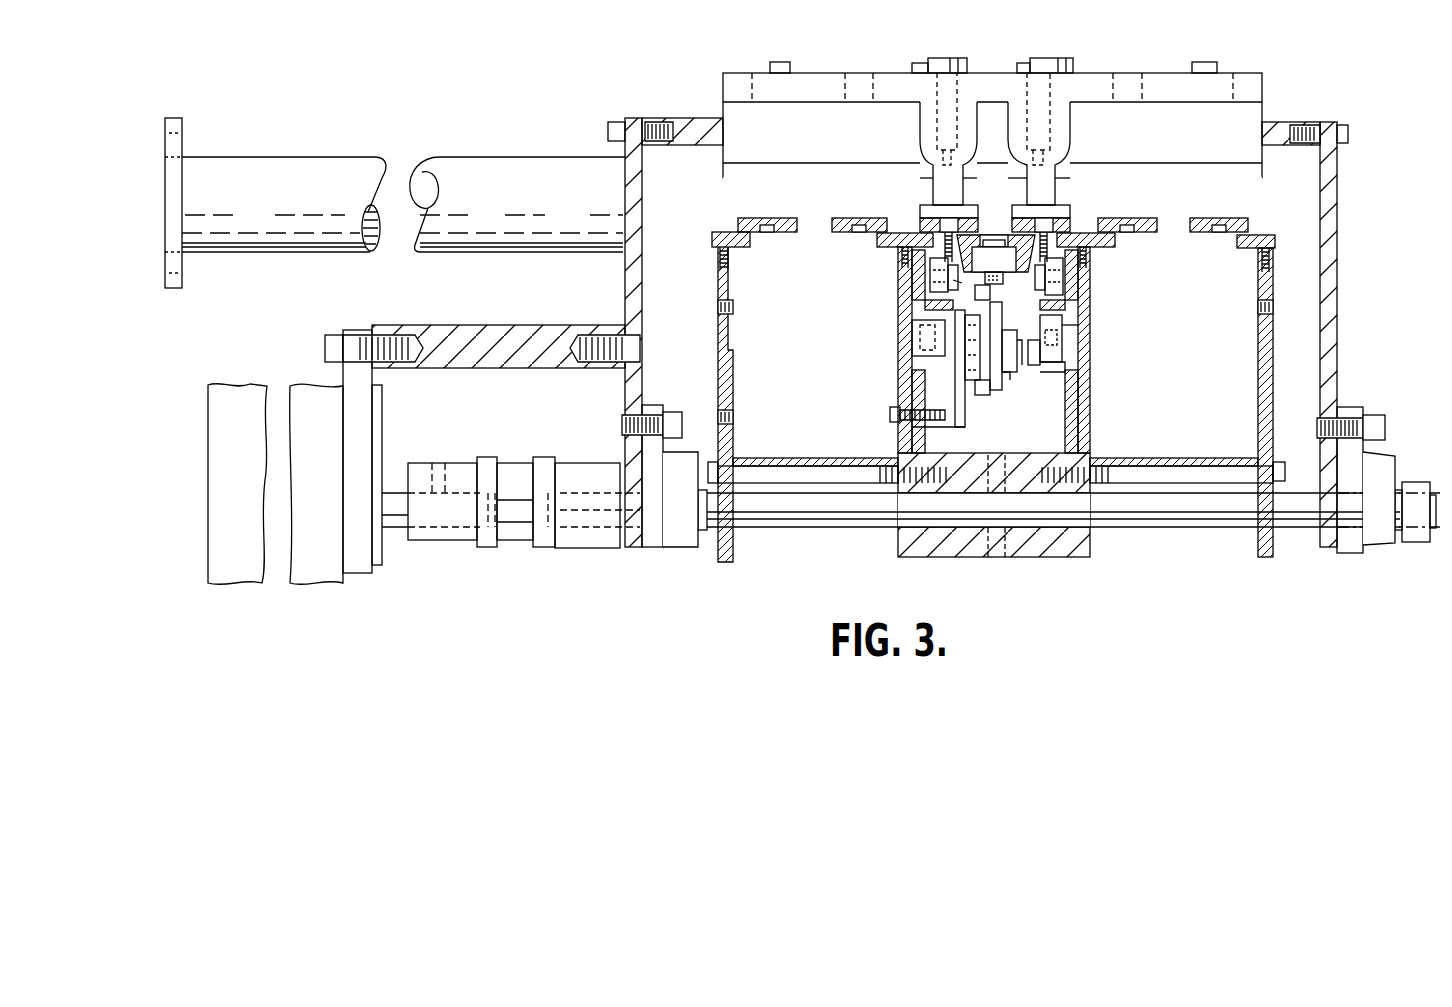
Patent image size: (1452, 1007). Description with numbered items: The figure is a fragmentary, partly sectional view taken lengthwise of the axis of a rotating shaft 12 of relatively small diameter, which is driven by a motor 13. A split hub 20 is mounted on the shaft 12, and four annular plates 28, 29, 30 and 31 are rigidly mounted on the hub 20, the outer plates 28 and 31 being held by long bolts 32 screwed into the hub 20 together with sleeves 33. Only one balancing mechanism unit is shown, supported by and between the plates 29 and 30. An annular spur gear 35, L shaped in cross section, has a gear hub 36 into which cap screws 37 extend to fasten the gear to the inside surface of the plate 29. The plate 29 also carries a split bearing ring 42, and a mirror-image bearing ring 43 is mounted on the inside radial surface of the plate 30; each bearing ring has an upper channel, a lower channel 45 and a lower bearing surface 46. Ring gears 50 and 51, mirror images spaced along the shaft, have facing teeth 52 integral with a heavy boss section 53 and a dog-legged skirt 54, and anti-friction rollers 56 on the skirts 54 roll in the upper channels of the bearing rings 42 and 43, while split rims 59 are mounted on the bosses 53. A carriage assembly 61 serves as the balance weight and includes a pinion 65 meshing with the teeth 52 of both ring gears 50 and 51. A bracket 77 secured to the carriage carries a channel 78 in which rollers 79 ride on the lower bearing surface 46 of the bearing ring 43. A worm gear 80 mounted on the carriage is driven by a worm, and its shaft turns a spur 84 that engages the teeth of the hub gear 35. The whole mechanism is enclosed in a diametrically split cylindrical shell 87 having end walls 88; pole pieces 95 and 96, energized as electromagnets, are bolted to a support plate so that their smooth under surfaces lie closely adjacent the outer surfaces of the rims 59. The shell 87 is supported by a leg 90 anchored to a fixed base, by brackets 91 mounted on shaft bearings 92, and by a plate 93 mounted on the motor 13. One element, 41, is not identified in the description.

The shaft 12 is at (838, 512).
The motor 13 is at (330, 555).
The hub 20 is at (1020, 482).
The annular plate 28 is at (718, 282).
The annular plate 29 is at (904, 270).
The annular plate 30 is at (1090, 284).
The annular plate 31 is at (1273, 292).
The long bolts 32 is at (775, 462).
The sleeves 33 is at (834, 458).
The annular spur gear 35 is at (968, 407).
The gear hub 36 is at (950, 428).
The cap screws 37 is at (930, 410).
The bearing 41 is at (1025, 333).
The split bearing ring 42 is at (905, 312).
The bearing ring 43 is at (1090, 299).
The lower channel 45 is at (1075, 331).
The lower bearing surface 46 is at (912, 364).
The ring gear 50 is at (946, 255).
The ring gear 51 is at (1062, 250).
The teeth 52 is at (968, 246).
The boss section 53 is at (950, 240).
The skirt 54 is at (915, 285).
The anti-friction rollers 56 is at (1092, 262).
The rims 59 is at (968, 216).
The carriage assembly 61 is at (1010, 385).
The pinion 65 is at (1015, 264).
The bracket 77 is at (1012, 375).
The channel 78 is at (1065, 367).
The rollers 79 is at (1075, 354).
The worm gear 80 is at (1002, 385).
The spur 84 is at (945, 360).
The cylindrical shell 87 is at (1342, 165).
The end walls 88 is at (625, 283).
The leg 90 is at (310, 157).
The brackets 91 is at (652, 405).
The shaft bearings 92 is at (670, 548).
The plate 93 is at (458, 345).
The pole piece 95 is at (948, 188).
The pole piece 96 is at (1043, 182).